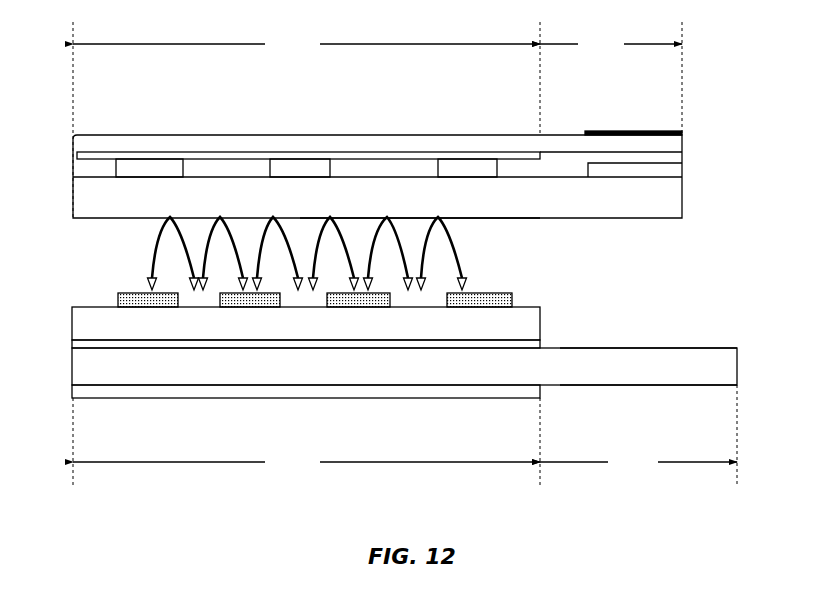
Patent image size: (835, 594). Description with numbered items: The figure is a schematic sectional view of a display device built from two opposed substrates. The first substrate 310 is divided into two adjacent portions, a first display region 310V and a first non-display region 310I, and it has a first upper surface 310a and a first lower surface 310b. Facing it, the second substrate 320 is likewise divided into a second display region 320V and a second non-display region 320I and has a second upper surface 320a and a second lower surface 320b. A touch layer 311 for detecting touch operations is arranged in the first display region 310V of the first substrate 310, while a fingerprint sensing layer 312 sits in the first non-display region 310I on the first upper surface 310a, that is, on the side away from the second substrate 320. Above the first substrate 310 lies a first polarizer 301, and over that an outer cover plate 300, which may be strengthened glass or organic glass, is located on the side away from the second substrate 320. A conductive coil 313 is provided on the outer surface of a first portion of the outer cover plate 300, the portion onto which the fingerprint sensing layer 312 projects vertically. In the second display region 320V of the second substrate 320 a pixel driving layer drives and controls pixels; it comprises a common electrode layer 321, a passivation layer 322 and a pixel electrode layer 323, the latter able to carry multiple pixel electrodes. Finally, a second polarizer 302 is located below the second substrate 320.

The outer cover plate 300 is at (384, 178).
The first polarizer 301 is at (145, 157).
The second polarizer 302 is at (147, 392).
The first substrate 310 is at (672, 200).
The first upper surface 310a is at (556, 175).
The first lower surface 310b is at (560, 218).
The first display region 310V is at (306, 44).
The first non-display region 310I is at (611, 44).
The touch layer 311 is at (118, 171).
The fingerprint sensing layer 312 is at (670, 170).
The conductive coil 313 is at (638, 130).
The second substrate 320 is at (713, 368).
The second upper surface 320a is at (680, 348).
The second lower surface 320b is at (680, 385).
The second display region 320V is at (306, 462).
The second non-display region 320I is at (638, 462).
The common electrode layer 321 is at (543, 345).
The passivation layer 322 is at (132, 330).
The pixel electrode layer 323 is at (125, 298).